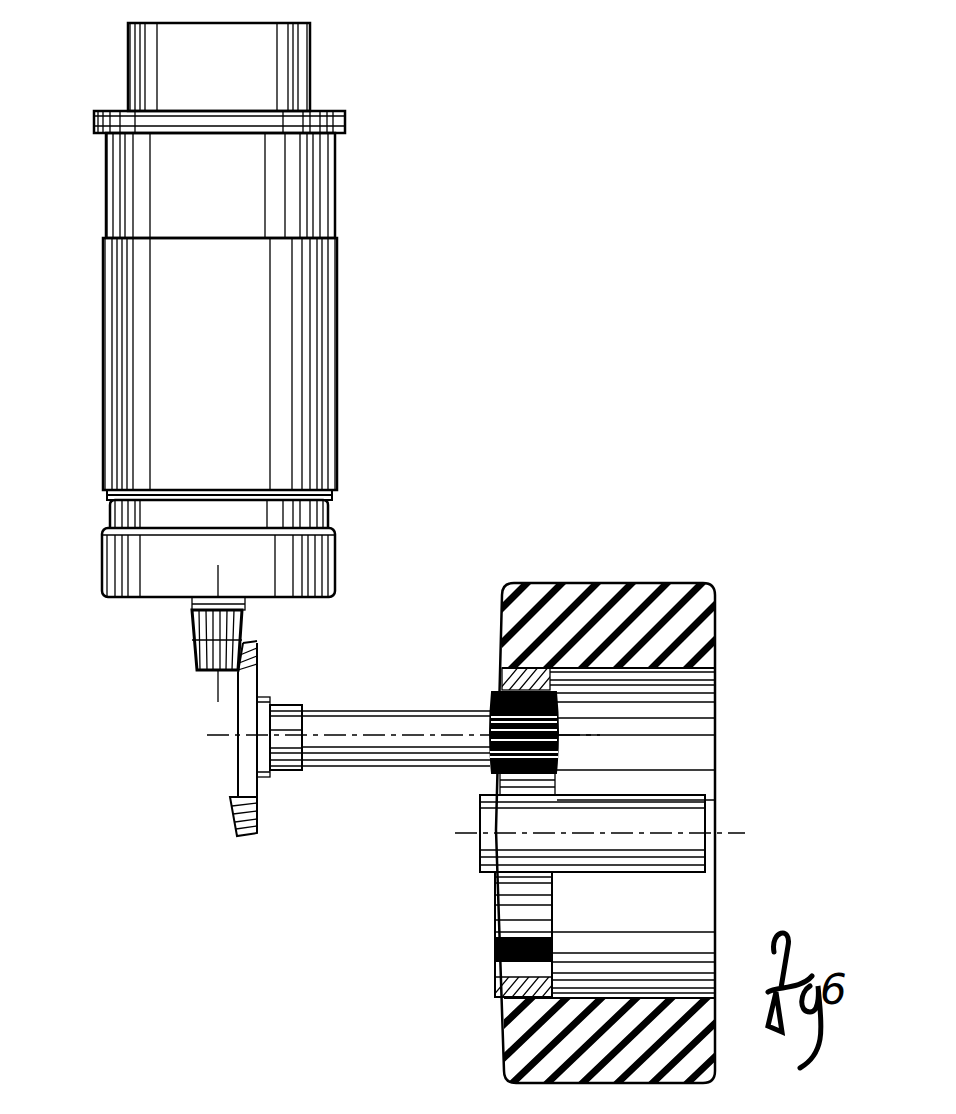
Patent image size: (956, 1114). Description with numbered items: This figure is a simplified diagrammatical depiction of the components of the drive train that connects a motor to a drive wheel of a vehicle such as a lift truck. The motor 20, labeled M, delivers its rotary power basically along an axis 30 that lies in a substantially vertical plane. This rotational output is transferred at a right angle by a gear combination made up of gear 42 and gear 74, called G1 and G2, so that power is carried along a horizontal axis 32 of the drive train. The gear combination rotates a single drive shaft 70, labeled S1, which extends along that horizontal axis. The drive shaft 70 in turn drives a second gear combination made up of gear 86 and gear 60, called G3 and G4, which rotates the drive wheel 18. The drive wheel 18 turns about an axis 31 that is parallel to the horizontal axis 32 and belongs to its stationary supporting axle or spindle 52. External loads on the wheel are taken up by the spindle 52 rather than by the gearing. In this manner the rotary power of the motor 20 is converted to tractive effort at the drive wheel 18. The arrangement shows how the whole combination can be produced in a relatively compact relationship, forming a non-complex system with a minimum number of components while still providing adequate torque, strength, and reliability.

The motor 20 is at (303, 98).
The axis 30 is at (216, 567).
The gear 42 is at (193, 662).
The gear 74 is at (247, 713).
The horizontal axis 32 is at (207, 735).
The drive shaft 70 is at (370, 745).
The gear 60 is at (503, 667).
The gear 86 is at (492, 700).
The drive wheel 18 is at (728, 604).
The spindle 52 is at (667, 815).
The axis 31 is at (690, 835).